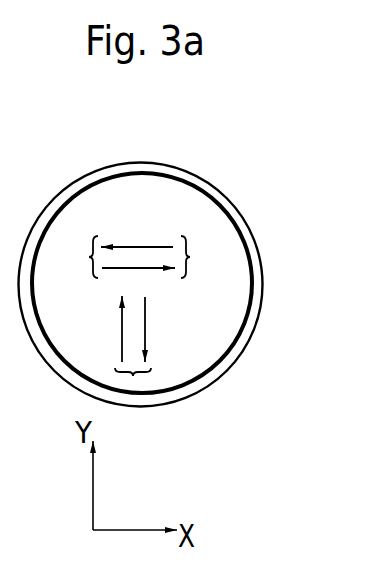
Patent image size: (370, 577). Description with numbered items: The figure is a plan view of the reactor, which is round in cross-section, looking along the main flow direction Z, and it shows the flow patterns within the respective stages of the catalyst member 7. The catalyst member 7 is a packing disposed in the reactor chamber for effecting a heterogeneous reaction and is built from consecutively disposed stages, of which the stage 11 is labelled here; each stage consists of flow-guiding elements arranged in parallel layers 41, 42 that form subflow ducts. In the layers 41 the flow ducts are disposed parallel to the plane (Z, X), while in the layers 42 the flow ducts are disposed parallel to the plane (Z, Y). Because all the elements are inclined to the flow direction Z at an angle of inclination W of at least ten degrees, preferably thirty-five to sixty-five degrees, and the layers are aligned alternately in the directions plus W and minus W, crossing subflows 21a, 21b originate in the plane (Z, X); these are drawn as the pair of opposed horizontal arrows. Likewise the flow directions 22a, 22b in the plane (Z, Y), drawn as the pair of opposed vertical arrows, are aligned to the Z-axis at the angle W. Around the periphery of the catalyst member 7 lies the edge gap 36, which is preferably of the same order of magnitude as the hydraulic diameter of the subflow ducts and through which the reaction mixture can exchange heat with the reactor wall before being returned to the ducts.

The catalyst member 7 is at (73, 318).
The edge gap 36 is at (226, 273).
The crossing subflow 21a is at (131, 246).
The crossing subflow 21b is at (148, 267).
The parallel layers 41 is at (186, 258).
The flow direction 22a is at (121, 323).
The flow direction 22b is at (146, 322).
The parallel layers 42 is at (132, 375).
The stage 11 is at (359, 361).